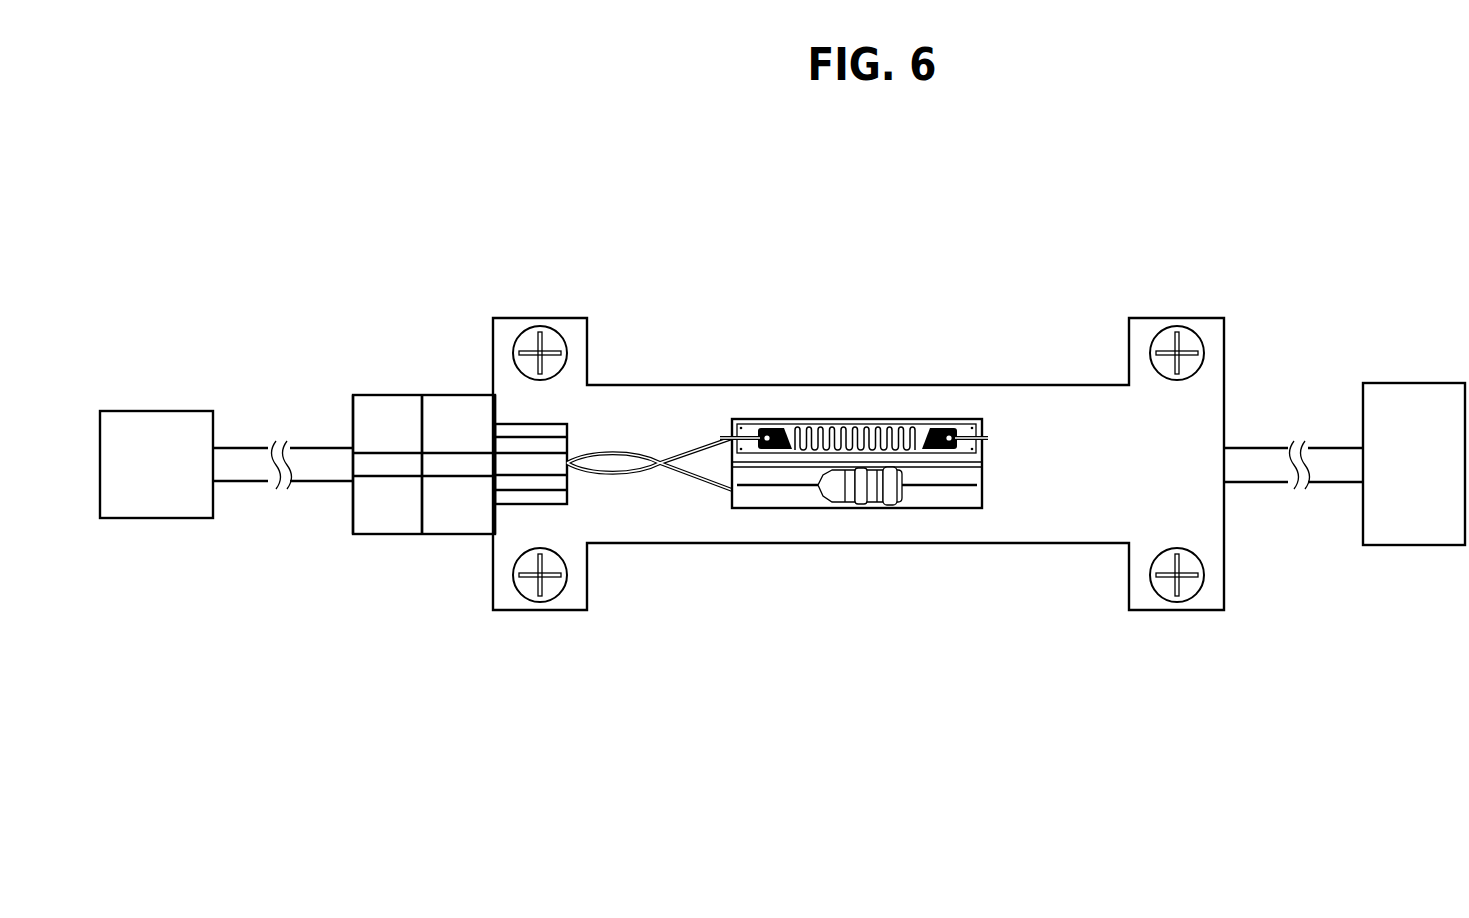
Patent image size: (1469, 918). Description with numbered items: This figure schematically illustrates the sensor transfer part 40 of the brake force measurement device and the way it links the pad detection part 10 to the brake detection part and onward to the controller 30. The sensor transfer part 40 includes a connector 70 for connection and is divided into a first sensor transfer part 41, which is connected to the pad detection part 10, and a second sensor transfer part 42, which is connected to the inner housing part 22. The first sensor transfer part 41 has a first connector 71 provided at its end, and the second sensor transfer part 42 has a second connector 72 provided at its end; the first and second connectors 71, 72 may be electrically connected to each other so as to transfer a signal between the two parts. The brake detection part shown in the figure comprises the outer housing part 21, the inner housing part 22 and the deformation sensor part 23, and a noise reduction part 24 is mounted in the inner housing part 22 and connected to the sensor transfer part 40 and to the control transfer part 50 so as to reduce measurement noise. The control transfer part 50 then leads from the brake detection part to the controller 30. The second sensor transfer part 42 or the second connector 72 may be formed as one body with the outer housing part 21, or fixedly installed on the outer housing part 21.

The pad detection part 10 is at (160, 518).
The outer housing part 21 is at (1060, 543).
The inner housing part 22 is at (854, 475).
The deformation sensor part 23 is at (855, 424).
The noise reduction part 24 is at (866, 504).
The controller 30 is at (1417, 545).
The sensor transfer part 40 is at (472, 598).
The first sensor transfer part 41 is at (318, 467).
The second sensor transfer part 42 is at (612, 477).
The control transfer part 50 is at (1263, 482).
The connector 70 is at (424, 396).
The first connector 71 is at (390, 395).
The second connector 72 is at (458, 428).